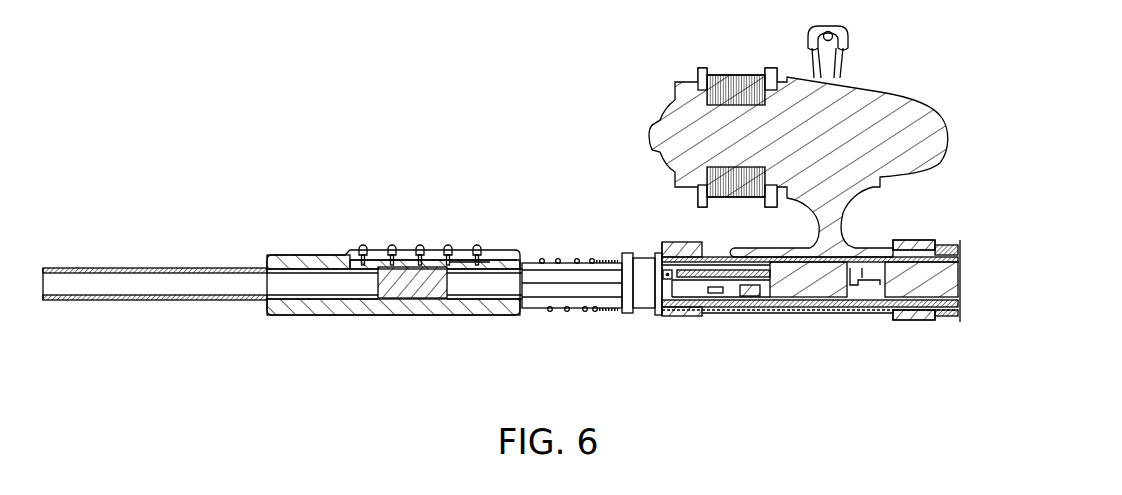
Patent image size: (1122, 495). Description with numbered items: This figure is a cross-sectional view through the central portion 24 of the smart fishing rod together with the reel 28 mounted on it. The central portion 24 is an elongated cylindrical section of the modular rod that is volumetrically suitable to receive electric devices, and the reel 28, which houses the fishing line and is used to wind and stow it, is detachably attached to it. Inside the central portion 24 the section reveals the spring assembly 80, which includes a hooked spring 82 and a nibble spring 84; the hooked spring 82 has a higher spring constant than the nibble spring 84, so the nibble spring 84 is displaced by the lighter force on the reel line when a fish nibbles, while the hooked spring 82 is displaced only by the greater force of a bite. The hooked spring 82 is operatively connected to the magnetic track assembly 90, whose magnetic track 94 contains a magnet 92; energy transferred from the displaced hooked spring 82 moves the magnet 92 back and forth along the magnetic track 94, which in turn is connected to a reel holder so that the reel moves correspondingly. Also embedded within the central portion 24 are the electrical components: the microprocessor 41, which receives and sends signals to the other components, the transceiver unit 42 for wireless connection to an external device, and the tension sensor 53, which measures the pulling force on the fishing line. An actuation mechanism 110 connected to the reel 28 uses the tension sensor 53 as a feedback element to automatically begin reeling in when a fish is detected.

The reel 28 is at (927, 106).
The spring assembly 80 is at (550, 256).
The hooked spring 82 is at (549, 311).
The nibble spring 84 is at (597, 311).
The magnetic track assembly 90 is at (652, 282).
The magnet 92 is at (669, 284).
The magnetic track 94 is at (703, 280).
The tension sensor 53 is at (717, 293).
The actuation mechanism 110 is at (755, 296).
The microprocessor 41 is at (823, 308).
The central portion 24 is at (860, 311).
The transceiver unit 42 is at (940, 311).